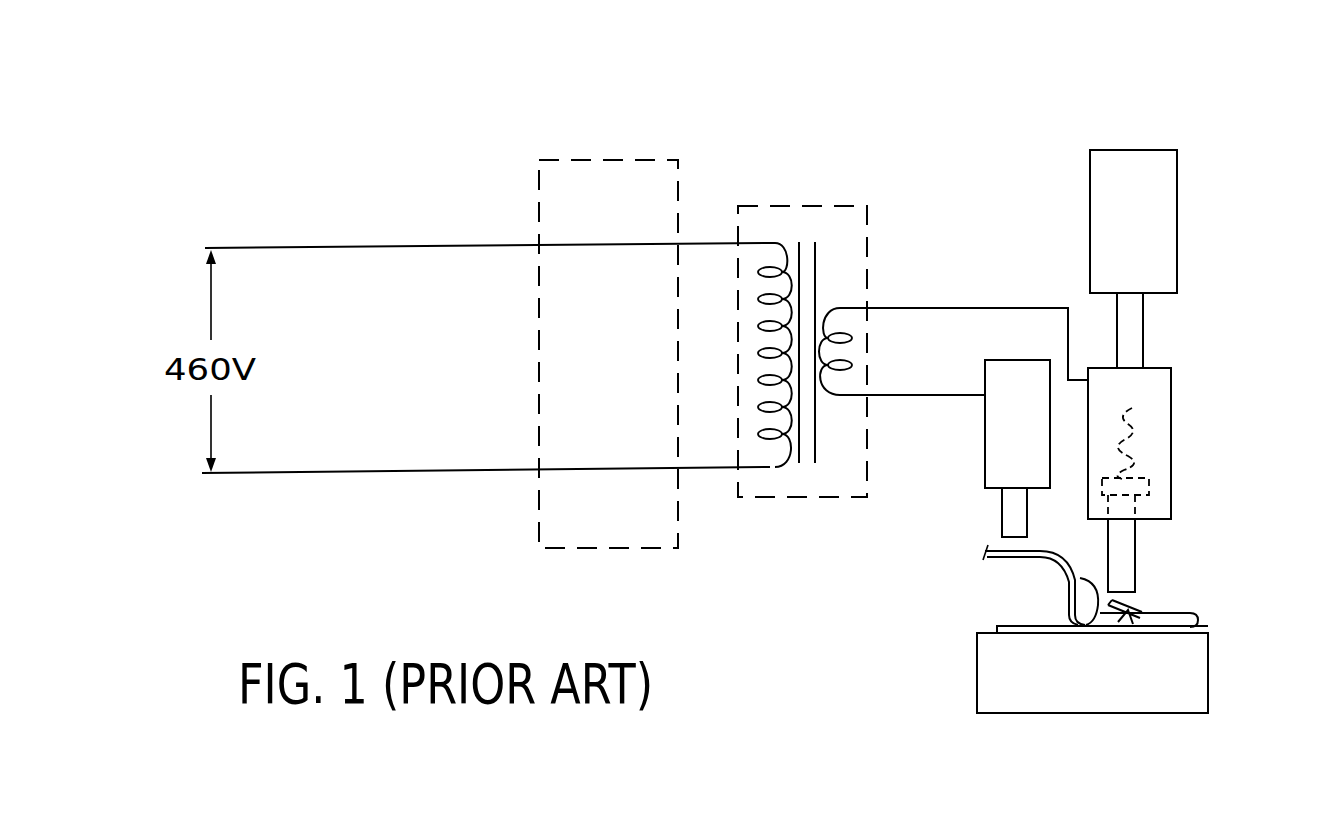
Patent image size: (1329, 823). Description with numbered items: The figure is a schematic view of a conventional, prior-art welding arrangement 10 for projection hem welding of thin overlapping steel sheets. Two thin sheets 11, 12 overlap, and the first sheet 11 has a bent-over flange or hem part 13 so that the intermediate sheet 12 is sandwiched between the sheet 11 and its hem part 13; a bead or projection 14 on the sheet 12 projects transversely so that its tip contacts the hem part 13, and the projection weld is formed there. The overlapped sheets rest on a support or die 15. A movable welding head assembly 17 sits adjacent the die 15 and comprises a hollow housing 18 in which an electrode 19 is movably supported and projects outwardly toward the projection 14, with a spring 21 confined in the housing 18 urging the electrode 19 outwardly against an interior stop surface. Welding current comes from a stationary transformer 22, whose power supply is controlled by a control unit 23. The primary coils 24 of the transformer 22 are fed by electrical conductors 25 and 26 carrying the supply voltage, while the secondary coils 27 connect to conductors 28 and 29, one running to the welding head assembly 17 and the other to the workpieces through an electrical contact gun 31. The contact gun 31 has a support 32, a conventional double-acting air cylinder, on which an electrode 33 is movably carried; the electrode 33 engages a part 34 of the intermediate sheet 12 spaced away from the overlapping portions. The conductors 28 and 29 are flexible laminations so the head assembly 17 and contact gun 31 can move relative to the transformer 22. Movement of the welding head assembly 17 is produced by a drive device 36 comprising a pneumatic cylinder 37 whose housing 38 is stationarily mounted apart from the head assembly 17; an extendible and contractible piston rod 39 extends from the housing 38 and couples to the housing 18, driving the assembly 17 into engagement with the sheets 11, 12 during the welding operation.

The welding arrangement 10 is at (843, 92).
The sheet 11 is at (1012, 626).
The sheet 12 is at (1072, 577).
The hem part 13 is at (1175, 613).
The projection 14 is at (1125, 620).
The die 15 is at (1190, 712).
The welding head assembly 17 is at (1188, 430).
The housing 18 is at (1172, 393).
The electrode 19 is at (1125, 535).
The spring 21 is at (1134, 457).
The transformer 22 is at (777, 210).
The control unit 23 is at (575, 158).
The primary coils 24 is at (775, 470).
The electrical conductor 25 is at (260, 248).
The electrical conductor 26 is at (248, 476).
The secondary coils 27 is at (826, 320).
The electrical conductor 28 is at (980, 300).
The electrical conductor 29 is at (903, 399).
The electrical contact gun 31 is at (958, 463).
The support 32 is at (1002, 420).
The electrode 33 is at (1010, 498).
The part 34 is at (995, 557).
The drive device 36 is at (1222, 215).
The pneumatic cylinder 37 is at (1078, 180).
The housing 38 is at (1126, 170).
The piston rod 39 is at (1130, 323).